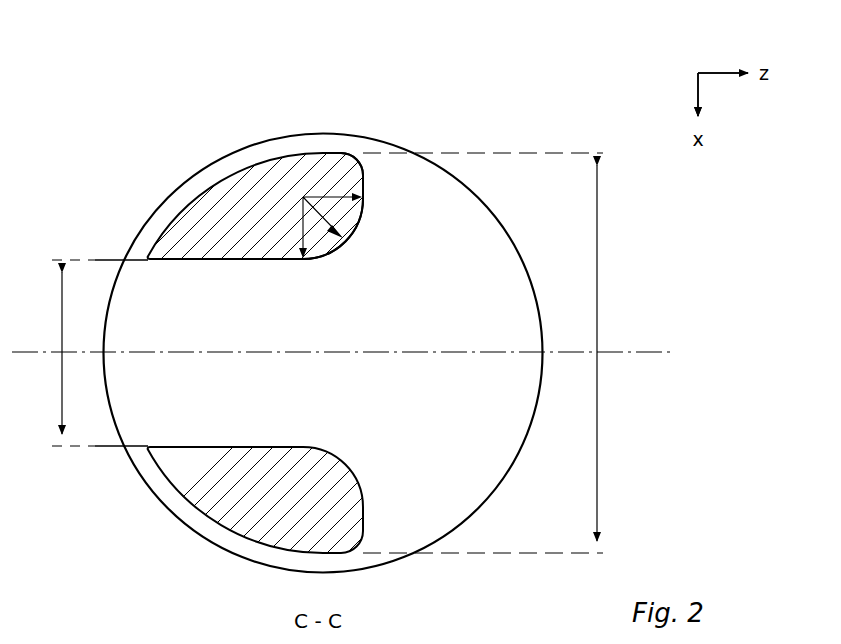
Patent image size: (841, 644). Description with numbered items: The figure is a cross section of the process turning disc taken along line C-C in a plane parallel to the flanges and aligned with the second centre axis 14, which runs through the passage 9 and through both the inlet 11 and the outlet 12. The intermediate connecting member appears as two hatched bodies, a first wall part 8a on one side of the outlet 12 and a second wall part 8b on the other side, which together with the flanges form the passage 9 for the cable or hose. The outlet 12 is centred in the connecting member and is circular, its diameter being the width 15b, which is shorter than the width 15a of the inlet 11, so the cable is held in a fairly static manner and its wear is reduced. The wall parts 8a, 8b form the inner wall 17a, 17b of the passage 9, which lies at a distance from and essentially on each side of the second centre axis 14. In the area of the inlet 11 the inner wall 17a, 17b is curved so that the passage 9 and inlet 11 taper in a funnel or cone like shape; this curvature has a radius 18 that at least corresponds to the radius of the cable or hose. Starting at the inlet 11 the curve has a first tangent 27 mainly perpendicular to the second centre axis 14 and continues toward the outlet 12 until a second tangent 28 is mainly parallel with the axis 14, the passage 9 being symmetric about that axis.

The first wall part 8a is at (218, 257).
The second wall part 8b is at (260, 492).
The passage 9 is at (292, 328).
The inlet 11 is at (357, 322).
The outlet 12 is at (137, 325).
The second centre axis 14 is at (650, 354).
The width of the inlet 15a is at (483, 353).
The width of the outlet 15b is at (62, 353).
The inner wall 17a is at (233, 210).
The inner wall 17b is at (200, 500).
The radius 18 is at (313, 212).
The first tangent 27 is at (366, 155).
The second tangent 28 is at (293, 257).